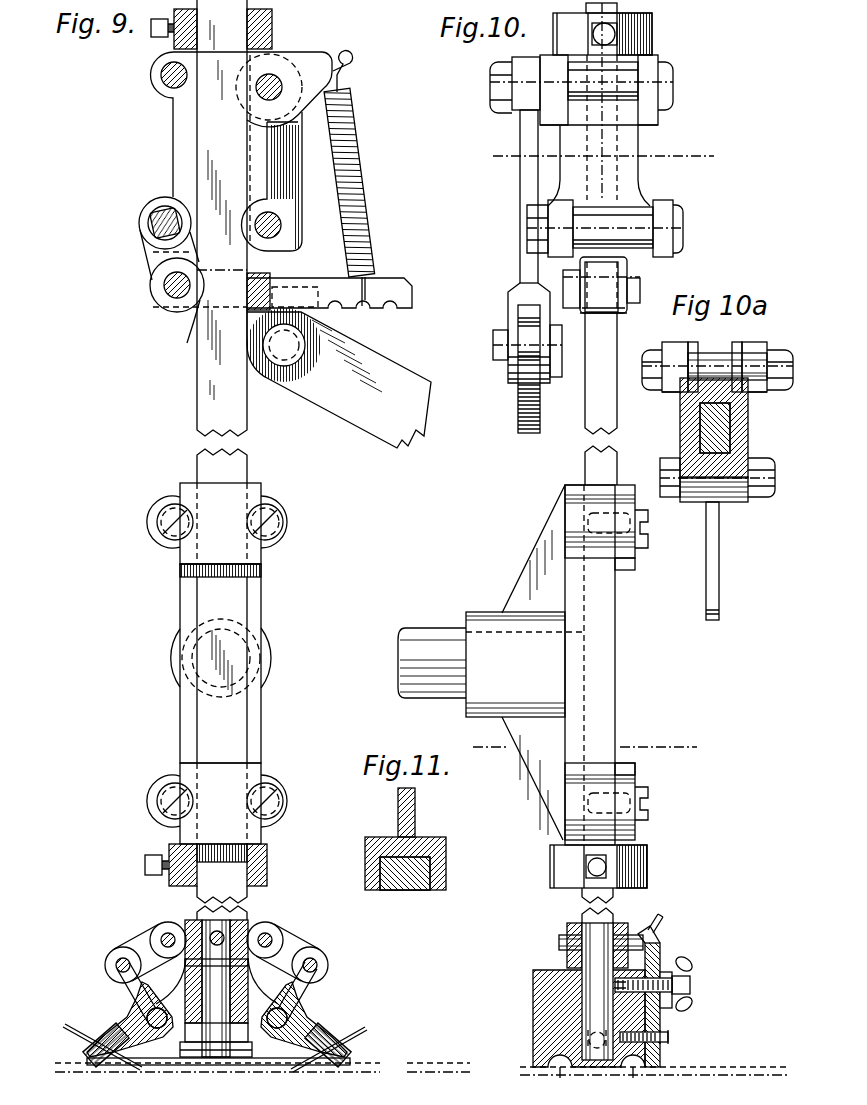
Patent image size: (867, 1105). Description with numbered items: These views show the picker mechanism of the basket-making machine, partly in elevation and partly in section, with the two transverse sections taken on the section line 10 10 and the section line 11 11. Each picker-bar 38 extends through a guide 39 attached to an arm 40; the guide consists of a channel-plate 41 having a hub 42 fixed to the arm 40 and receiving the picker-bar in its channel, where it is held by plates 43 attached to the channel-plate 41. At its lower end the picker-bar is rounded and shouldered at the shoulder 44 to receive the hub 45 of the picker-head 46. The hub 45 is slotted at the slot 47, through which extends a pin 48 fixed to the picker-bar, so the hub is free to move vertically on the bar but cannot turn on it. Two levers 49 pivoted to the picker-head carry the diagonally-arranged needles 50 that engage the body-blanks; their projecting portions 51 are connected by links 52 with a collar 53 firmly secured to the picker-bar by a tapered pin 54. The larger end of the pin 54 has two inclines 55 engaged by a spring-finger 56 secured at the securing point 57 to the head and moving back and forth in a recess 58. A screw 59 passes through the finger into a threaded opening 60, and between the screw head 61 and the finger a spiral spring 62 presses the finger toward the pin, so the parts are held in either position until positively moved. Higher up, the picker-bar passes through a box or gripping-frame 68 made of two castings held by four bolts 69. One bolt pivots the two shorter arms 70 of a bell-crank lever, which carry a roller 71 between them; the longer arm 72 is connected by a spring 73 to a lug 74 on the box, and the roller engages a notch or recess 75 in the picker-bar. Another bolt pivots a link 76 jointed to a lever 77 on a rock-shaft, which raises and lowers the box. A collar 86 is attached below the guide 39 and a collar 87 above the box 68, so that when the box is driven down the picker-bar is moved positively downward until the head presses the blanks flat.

In FIG. 10, the section line 10 10 is at (604, 148).
In FIG. 10, the section line 11 11 is at (588, 745).
In FIG. 9, the picker-bar 38 is at (222, 460).
In FIG. 10, the picker-bar 38 is at (600, 410).
In FIG. 10A, the picker-bar 38 is at (690, 421).
In FIG. 11, the picker-bar 38 is at (410, 886).
In FIG. 9, the guide 39 is at (200, 658).
In FIG. 10, the guide 39 is at (605, 606).
In FIG. 10, the arm 40 is at (411, 656).
In FIG. 9, the channel-plate 41 is at (262, 597).
In FIG. 11, the channel-plate 41 is at (446, 856).
In FIG. 10, the hub 42 is at (482, 612).
In FIG. 9, the plates 43 is at (217, 663).
In FIG. 10, the plates 43 is at (636, 565).
In FIG. 9, the shoulder 44 is at (195, 925).
In FIG. 9, the hub 45 is at (250, 977).
In FIG. 9, the picker-head 46 is at (120, 1013).
In FIG. 10, the picker-head 46 is at (535, 1033).
In FIG. 9, the slot 47 is at (197, 1058).
In FIG. 10, the slot 47 is at (596, 1042).
In FIG. 9, the pin 48 is at (180, 1058).
In FIG. 10, the pin 48 is at (604, 1050).
In FIG. 9, the levers 49 is at (84, 1043).
In FIG. 9, the needles 50 is at (132, 1064).
In FIG. 9, the projecting portions 51 is at (138, 988).
In FIG. 9, the links 52 is at (140, 945).
In FIG. 9, the collar 53 is at (240, 940).
In FIG. 9, the pin 54 is at (187, 963).
In FIG. 10, the pin 54 is at (565, 943).
In FIG. 10, the inclines 55 is at (656, 940).
In FIG. 10, the spring-finger 56 is at (661, 914).
In FIG. 10, the securing point 57 is at (669, 1039).
In FIG. 10, the recess 58 is at (668, 1000).
In FIG. 10, the screw 59 is at (650, 975).
In FIG. 10, the threaded opening 60 is at (617, 985).
In FIG. 10, the screw head 61 is at (691, 966).
In FIG. 10, the spiral spring 62 is at (692, 989).
In FIG. 9, the box or gripping-frame 68 is at (173, 150).
In FIG. 10, the box or gripping-frame 68 is at (638, 148).
In FIG. 10A, the box or gripping-frame 68 is at (748, 440).
In FIG. 9, the bolts 69 is at (273, 79).
In FIG. 10, the bolts 69 is at (674, 80).
In FIG. 10A, the bolts 69 is at (766, 470).
In FIG. 9, the shorter arms 70 is at (155, 261).
In FIG. 10, the shorter arms 70 is at (620, 262).
In FIG. 10A, the shorter arms 70 is at (738, 352).
In FIG. 9, the roller 71 is at (172, 307).
In FIG. 10, the roller 71 is at (620, 316).
In FIG. 9, the longer arm 72 is at (411, 290).
In FIG. 10A, the longer arm 72 is at (719, 557).
In FIG. 9, the spring 73 is at (367, 190).
In FIG. 9, the lug 74 is at (357, 62).
In FIG. 9, the notch or recess 75 is at (190, 335).
In FIG. 9, the link 76 is at (292, 195).
In FIG. 10, the link 76 is at (520, 188).
In FIG. 9, the lever 77 is at (339, 378).
In FIG. 10, the lever 77 is at (518, 410).
In FIG. 9, the collar 86 is at (268, 862).
In FIG. 10, the collar 86 is at (647, 856).
In FIG. 9, the collar 87 is at (273, 20).
In FIG. 10, the collar 87 is at (652, 31).